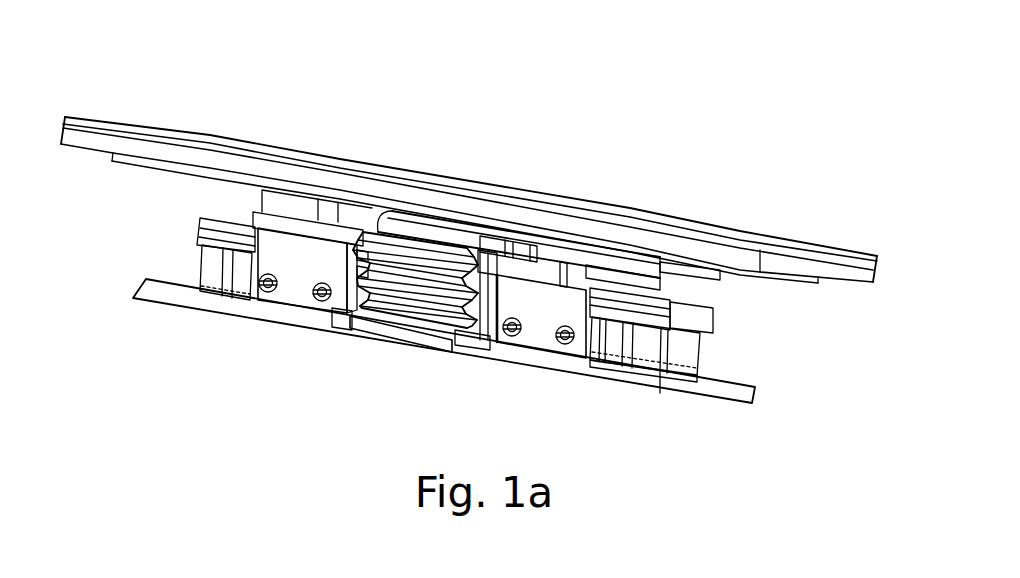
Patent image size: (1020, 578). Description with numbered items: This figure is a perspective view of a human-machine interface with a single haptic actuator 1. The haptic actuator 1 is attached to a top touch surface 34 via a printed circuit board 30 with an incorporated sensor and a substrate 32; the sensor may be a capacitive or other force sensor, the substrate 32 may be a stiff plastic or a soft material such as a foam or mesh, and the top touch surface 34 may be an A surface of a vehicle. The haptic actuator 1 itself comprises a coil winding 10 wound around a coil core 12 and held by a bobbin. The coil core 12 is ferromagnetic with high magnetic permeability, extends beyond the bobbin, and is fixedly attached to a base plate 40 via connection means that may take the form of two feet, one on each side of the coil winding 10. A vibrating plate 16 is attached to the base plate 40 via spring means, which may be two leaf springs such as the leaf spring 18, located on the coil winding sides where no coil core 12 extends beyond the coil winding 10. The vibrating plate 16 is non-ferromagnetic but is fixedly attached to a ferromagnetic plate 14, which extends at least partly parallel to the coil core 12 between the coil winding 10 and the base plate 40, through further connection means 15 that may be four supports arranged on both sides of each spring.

The haptic actuator 1 is at (190, 335).
The coil winding 10 is at (490, 330).
The coil core 12 is at (200, 227).
The ferromagnetic plate 14 is at (467, 337).
The further connection means 15 is at (297, 278).
The vibrating plate 16 is at (627, 280).
The leaf spring 18 is at (393, 302).
The printed circuit board 30 is at (807, 278).
The substrate 32 is at (99, 139).
The top touch surface 34 is at (173, 140).
The base plate 40 is at (145, 282).